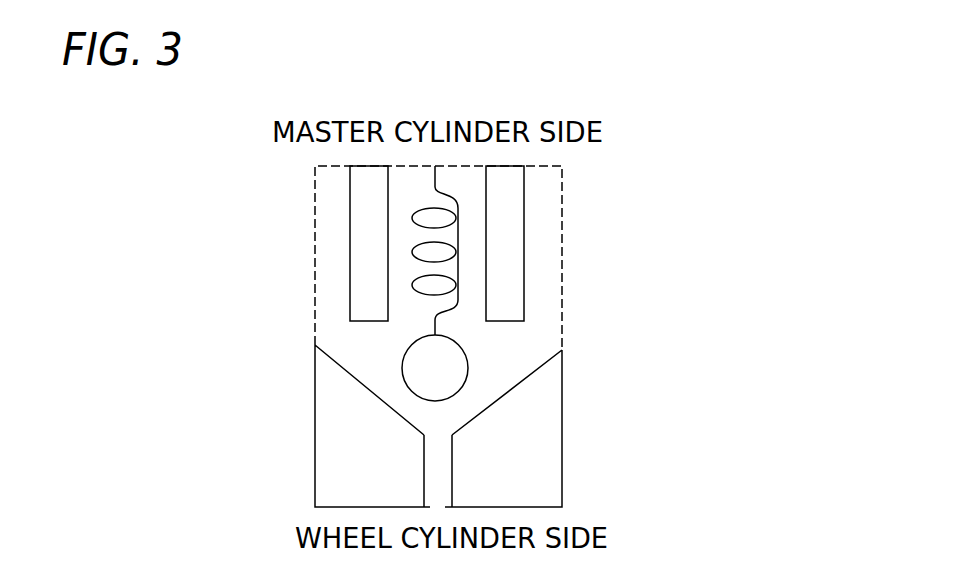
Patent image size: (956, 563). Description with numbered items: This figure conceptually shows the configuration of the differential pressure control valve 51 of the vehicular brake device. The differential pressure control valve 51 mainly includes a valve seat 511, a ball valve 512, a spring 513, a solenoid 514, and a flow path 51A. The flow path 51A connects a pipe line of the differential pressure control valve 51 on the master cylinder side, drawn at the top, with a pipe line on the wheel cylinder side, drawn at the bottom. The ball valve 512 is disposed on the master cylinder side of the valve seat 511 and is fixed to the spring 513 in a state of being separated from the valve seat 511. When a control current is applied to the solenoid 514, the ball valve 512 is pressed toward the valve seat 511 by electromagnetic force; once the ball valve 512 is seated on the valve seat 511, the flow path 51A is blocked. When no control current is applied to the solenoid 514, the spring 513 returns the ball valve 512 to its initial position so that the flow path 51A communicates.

The differential pressure control valve 51 is at (632, 190).
The valve seat 511 is at (335, 458).
The ball valve 512 is at (423, 357).
The spring 513 is at (414, 258).
The solenoid 514 is at (360, 228).
The flow path 51A is at (442, 458).